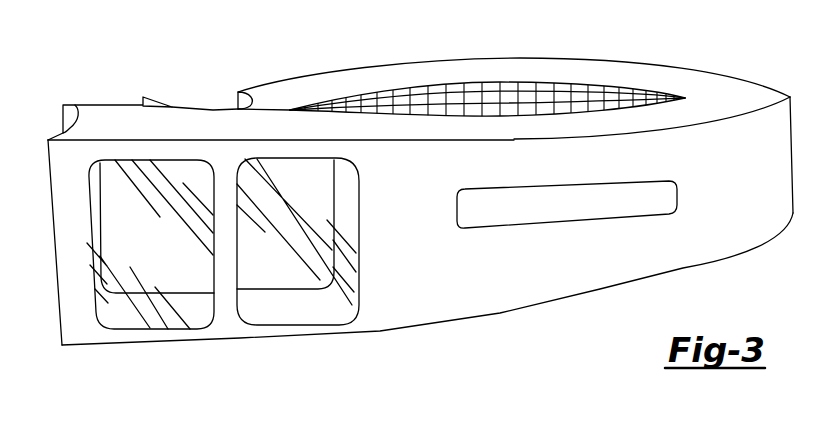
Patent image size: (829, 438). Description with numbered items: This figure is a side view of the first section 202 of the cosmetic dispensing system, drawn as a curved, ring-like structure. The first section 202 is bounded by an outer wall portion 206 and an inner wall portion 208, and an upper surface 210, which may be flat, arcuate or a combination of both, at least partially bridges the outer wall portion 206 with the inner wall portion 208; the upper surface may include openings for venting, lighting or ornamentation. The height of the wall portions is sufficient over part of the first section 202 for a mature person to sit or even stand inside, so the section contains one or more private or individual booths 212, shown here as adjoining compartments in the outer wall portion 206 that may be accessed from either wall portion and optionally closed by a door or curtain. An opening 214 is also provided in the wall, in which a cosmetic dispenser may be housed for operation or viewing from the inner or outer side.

The first section 202 is at (412, 292).
The outer wall portion 206 is at (413, 204).
The inner wall portion 208 is at (352, 122).
The upper surface 210 is at (118, 115).
The booths 212 is at (265, 281).
The opening 214 is at (507, 218).